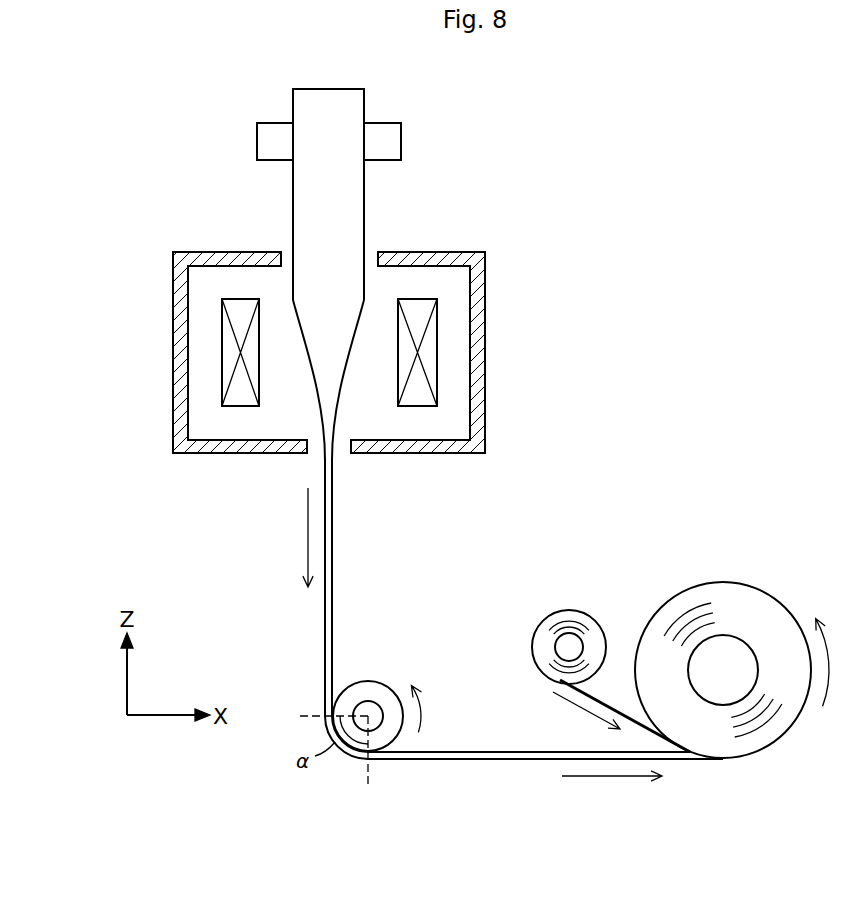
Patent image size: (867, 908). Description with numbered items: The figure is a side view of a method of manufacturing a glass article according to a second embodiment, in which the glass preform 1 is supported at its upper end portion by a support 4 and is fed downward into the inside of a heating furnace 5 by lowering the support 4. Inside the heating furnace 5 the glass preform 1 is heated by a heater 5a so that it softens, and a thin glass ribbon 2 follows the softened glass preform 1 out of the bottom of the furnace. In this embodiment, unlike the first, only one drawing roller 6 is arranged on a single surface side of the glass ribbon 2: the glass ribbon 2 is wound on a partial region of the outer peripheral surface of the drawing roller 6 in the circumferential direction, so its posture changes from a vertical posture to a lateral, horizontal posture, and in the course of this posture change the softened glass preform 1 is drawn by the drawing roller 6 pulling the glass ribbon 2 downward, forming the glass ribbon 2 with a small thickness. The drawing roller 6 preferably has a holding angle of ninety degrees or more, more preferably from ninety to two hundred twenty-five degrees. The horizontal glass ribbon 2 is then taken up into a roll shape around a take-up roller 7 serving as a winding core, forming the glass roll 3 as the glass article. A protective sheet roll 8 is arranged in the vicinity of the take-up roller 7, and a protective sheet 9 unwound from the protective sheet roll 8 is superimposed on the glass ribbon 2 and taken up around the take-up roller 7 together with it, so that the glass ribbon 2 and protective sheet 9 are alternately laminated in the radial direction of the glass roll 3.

The glass preform 1 is at (348, 207).
The glass ribbon 2 is at (523, 760).
The glass roll 3 is at (791, 755).
The support 4 is at (277, 132).
The heating furnace 5 is at (476, 291).
The heater 5a is at (232, 352).
The drawing roller 6 is at (367, 688).
The take-up roller 7 is at (738, 660).
The protective sheet roll 8 is at (534, 599).
The protective sheet 9 is at (612, 706).